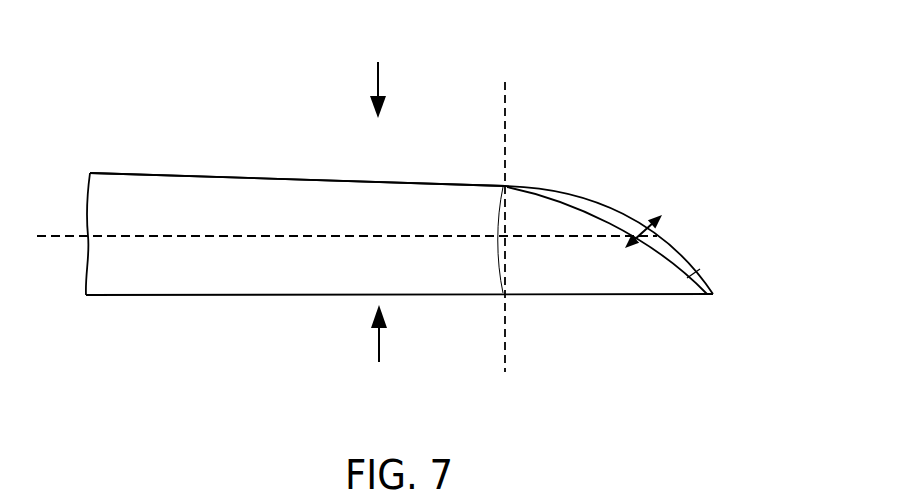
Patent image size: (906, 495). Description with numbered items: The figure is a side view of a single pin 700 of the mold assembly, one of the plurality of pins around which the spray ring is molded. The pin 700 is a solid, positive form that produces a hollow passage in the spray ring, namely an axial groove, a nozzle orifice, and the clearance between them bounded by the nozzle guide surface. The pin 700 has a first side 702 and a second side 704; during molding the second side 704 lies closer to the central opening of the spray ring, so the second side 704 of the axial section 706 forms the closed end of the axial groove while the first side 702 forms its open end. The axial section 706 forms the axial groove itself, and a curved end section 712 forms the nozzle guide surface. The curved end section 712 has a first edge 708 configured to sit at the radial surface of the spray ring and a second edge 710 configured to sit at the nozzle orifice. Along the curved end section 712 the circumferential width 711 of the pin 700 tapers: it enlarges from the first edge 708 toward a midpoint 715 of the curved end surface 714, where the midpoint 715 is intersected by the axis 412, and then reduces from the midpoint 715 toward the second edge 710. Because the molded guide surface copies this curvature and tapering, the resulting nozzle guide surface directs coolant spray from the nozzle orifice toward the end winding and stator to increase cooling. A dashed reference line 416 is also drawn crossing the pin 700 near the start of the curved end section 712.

The pin 700 is at (356, 181).
The first side 702 is at (379, 76).
The second side 704 is at (379, 349).
The axial section 706 is at (238, 173).
The first edge 708 is at (507, 185).
The second edge 710 is at (713, 294).
The circumferential width 711 is at (644, 240).
The curved end section 712 is at (588, 198).
The curved end surface 714 is at (694, 268).
The midpoint 715 is at (657, 225).
The axis 412 is at (55, 236).
The reference plane line 416 is at (505, 82).